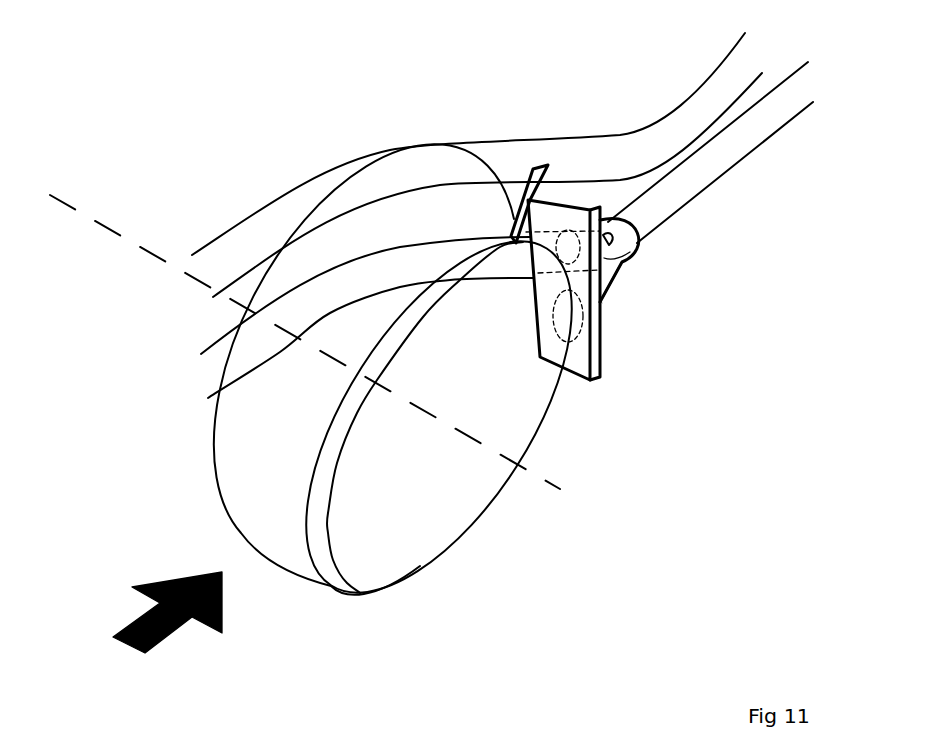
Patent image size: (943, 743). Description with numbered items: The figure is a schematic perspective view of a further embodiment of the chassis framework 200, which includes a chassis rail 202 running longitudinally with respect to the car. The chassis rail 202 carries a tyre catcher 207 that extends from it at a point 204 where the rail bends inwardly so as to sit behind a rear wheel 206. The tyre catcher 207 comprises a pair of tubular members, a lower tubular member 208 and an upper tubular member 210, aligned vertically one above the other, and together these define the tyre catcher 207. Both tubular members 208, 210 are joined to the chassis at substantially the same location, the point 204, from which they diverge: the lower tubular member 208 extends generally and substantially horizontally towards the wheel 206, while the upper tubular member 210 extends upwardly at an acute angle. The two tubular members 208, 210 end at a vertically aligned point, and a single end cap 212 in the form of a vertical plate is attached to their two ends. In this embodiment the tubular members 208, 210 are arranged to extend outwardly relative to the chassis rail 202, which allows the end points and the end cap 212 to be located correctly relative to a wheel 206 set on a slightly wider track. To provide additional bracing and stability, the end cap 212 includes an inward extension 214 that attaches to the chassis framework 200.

The chassis framework 200 is at (368, 152).
The chassis rail 202 is at (740, 153).
The point 204 is at (647, 236).
The rear wheel 206 is at (453, 543).
The tyre catcher 207 is at (617, 317).
The lower tubular member 208 is at (619, 289).
The upper tubular member 210 is at (576, 238).
The end cap 212 is at (578, 380).
The inward extension 214 is at (514, 218).